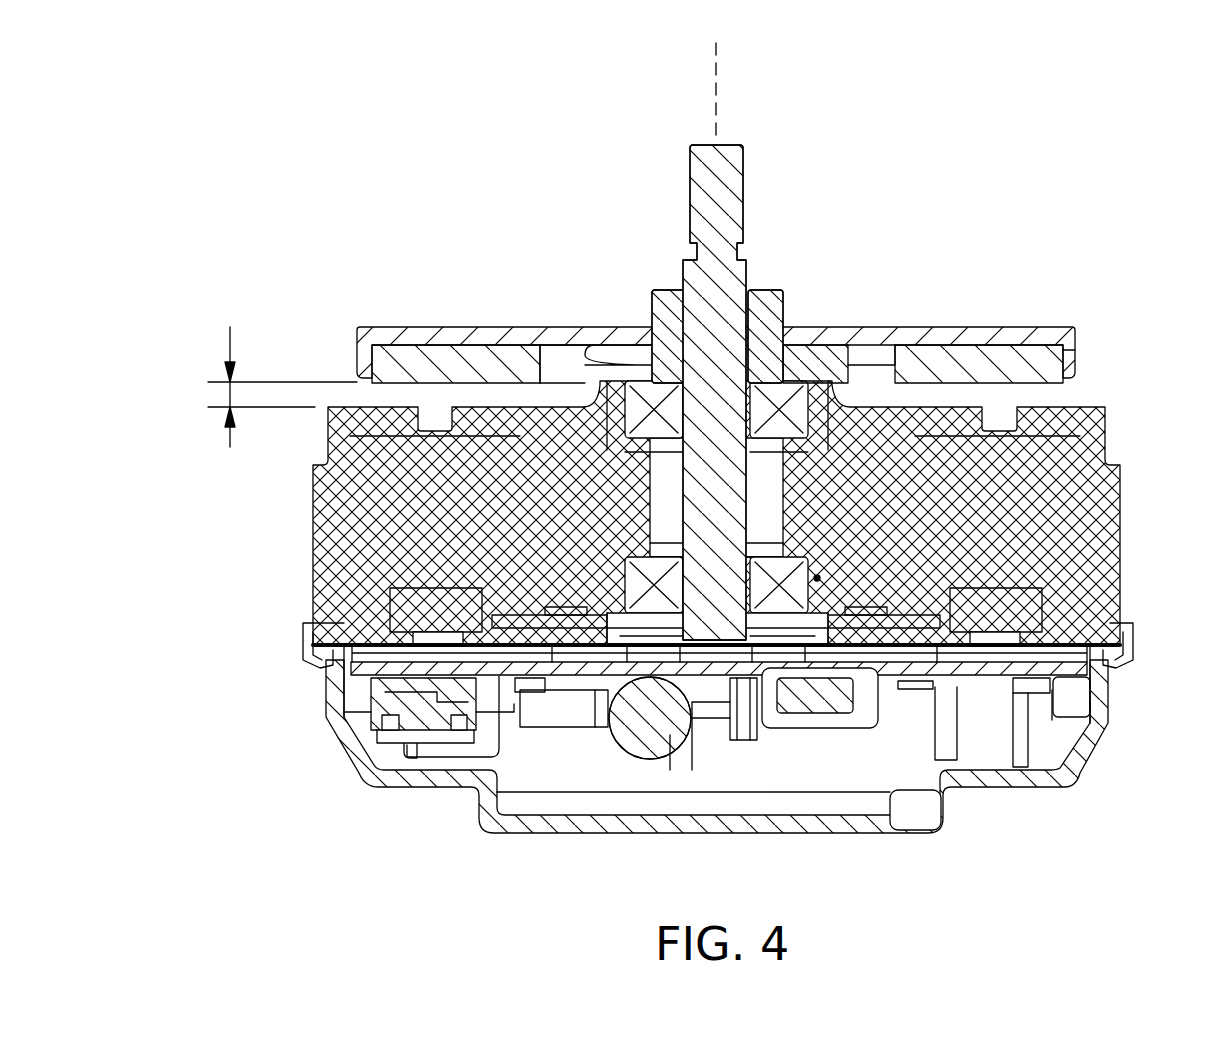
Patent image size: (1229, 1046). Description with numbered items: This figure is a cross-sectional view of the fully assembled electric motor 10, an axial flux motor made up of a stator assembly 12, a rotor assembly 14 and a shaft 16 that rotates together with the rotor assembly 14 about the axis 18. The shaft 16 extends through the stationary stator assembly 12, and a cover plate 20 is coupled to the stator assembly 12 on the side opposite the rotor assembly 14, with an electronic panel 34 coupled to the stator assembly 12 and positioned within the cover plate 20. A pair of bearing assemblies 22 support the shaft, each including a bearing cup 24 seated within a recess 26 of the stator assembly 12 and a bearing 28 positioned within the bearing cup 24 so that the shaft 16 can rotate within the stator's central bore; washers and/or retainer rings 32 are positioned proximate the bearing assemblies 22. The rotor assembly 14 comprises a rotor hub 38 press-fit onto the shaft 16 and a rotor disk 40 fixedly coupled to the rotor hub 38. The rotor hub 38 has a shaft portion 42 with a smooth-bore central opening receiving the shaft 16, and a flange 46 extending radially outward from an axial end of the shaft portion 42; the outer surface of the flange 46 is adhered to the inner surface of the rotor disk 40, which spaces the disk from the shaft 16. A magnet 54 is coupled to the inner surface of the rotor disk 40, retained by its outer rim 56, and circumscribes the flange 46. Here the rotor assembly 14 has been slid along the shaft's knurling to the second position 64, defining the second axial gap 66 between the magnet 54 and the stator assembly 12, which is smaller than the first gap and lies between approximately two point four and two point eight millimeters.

The electric motor 10 is at (298, 222).
The stator assembly 12 is at (1073, 548).
The rotor assembly 14 is at (535, 300).
The shaft 16 is at (728, 190).
The axis 18 is at (716, 108).
The cover plate 20 is at (1020, 790).
The bearing assemblies 22 is at (800, 623).
The bearing cup 24 is at (818, 578).
The recess 26 is at (608, 592).
The bearing 28 is at (666, 605).
The washers and/or retainer rings 32 is at (777, 560).
The electronic panel 34 is at (518, 759).
The rotor hub 38 is at (648, 308).
The rotor disk 40 is at (1047, 330).
The shaft portion 42 is at (768, 300).
The flange 46 is at (838, 352).
The magnet 54 is at (968, 357).
The outer rim 56 is at (1075, 352).
The second position 64 is at (668, 270).
The second axial gap 66 is at (230, 395).